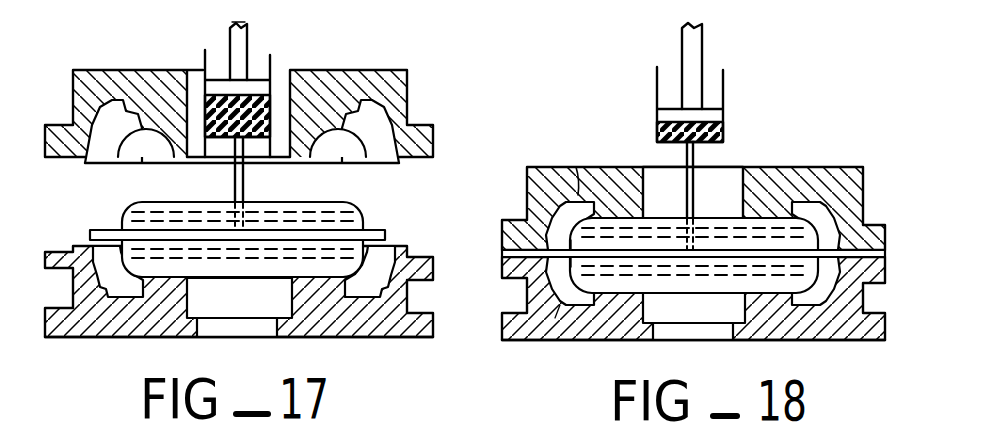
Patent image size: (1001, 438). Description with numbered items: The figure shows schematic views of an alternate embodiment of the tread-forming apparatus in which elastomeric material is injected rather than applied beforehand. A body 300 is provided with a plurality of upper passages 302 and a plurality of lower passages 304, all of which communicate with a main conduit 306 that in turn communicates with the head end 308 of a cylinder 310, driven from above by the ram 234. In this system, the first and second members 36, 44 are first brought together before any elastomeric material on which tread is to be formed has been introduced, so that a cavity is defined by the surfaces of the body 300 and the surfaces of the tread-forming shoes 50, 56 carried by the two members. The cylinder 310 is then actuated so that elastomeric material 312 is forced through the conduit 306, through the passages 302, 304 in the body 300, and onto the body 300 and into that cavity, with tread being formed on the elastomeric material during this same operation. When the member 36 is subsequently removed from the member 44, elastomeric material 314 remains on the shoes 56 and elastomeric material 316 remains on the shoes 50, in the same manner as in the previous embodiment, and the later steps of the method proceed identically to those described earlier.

In FIG. 17, the first member 36 is at (400, 67).
In FIG. 18, the first member 36 is at (815, 165).
In FIG. 17, the second member 44 is at (347, 340).
In FIG. 18, the second member 44 is at (850, 340).
In FIG. 17, the tread-forming shoe 50 is at (375, 262).
In FIG. 18, the tread-forming shoe 50 is at (560, 265).
In FIG. 17, the tread-forming shoe 56 is at (378, 140).
In FIG. 18, the tread-forming shoe 56 is at (560, 222).
In FIG. 17, the ram 234 is at (299, 11).
In FIG. 17, the body 300 is at (367, 197).
In FIG. 18, the body 300 is at (783, 230).
In FIG. 17, the upper passage 302 is at (187, 200).
In FIG. 18, the upper passage 302 is at (660, 216).
In FIG. 17, the lower passage 304 is at (135, 345).
In FIG. 18, the lower passage 304 is at (621, 322).
In FIG. 17, the main conduit 306 is at (243, 185).
In FIG. 18, the main conduit 306 is at (697, 160).
In FIG. 17, the head end 308 is at (278, 147).
In FIG. 18, the head end 308 is at (732, 120).
In FIG. 17, the cylinder 310 is at (183, 62).
In FIG. 18, the cylinder 310 is at (755, 78).
In FIG. 17, the elastomeric material 312 is at (250, 93).
In FIG. 18, the elastomeric material 312 is at (660, 127).
In FIG. 18, the elastomeric material 314 is at (576, 166).
In FIG. 18, the elastomeric material 316 is at (555, 318).